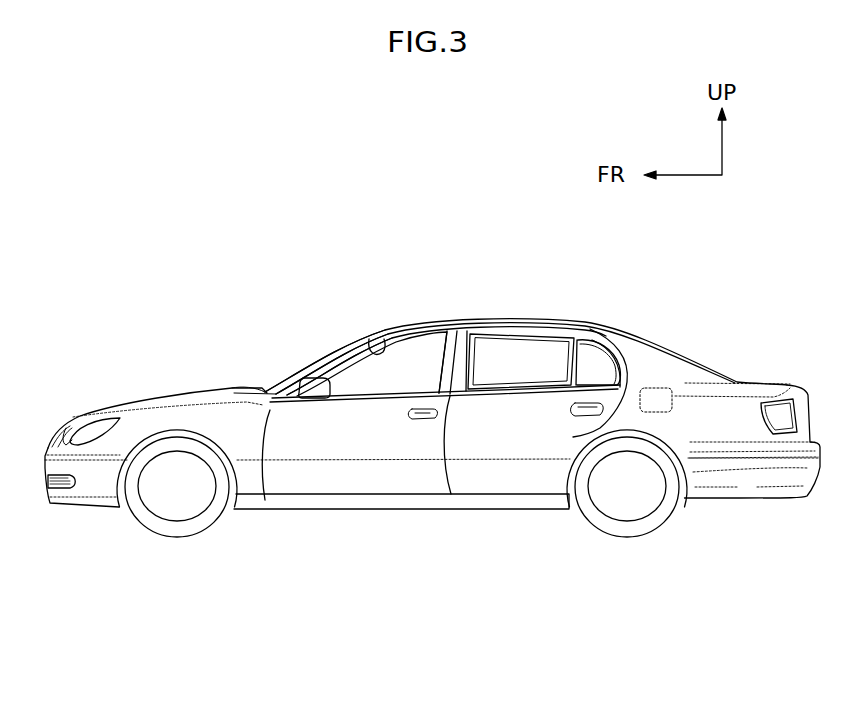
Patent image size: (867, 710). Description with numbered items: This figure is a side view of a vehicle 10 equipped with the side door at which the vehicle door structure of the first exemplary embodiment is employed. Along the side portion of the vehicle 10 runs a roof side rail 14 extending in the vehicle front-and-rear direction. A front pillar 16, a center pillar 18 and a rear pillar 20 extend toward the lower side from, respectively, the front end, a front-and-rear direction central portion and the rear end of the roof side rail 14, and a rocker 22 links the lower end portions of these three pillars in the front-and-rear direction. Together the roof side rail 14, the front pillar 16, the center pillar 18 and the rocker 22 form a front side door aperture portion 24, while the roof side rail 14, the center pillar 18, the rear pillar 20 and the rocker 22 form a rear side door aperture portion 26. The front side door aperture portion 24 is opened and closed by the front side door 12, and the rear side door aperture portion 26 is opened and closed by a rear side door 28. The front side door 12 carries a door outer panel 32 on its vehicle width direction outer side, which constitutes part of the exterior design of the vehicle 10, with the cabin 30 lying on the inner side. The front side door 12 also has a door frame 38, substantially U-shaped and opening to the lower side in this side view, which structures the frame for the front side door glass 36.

The vehicle 10 is at (187, 303).
The front side door 12 is at (348, 447).
The roof side rail 14 is at (448, 331).
The front pillar 16 is at (313, 358).
The center pillar 18 is at (481, 357).
The rear pillar 20 is at (637, 372).
The rocker 22 is at (480, 502).
The front side door aperture portion 24 is at (305, 450).
The rear side door aperture portion 26 is at (507, 443).
The rear side door 28 is at (560, 445).
The cabin 30 is at (417, 377).
The door outer panel 32 is at (393, 442).
The front side door glass 36 is at (432, 343).
The door frame 38 is at (380, 352).